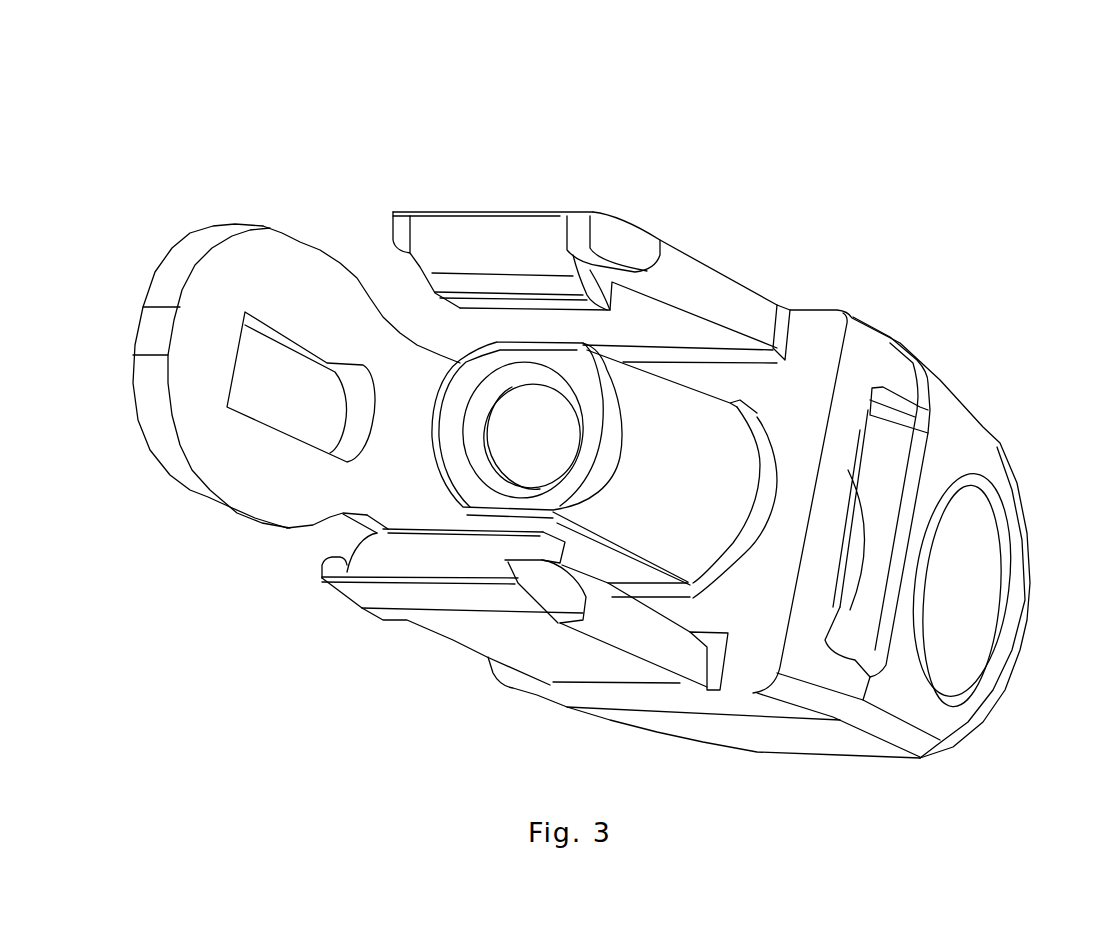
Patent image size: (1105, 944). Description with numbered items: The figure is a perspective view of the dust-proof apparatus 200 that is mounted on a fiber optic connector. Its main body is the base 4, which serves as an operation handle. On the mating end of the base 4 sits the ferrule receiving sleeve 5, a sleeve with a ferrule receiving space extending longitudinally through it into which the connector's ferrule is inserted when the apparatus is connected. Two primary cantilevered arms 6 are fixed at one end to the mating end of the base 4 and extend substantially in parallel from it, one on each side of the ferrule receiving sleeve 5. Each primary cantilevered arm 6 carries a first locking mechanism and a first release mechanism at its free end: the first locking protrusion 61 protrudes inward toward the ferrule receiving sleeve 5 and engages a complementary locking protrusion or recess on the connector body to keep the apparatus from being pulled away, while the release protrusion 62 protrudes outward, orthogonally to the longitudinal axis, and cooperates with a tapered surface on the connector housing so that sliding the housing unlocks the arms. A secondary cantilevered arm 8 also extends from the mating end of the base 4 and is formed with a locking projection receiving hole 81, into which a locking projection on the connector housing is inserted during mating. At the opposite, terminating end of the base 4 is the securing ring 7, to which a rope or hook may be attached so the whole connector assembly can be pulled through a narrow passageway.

The dust-proof apparatus 200 is at (749, 233).
The base 4 is at (857, 378).
The ferrule receiving sleeve 5 is at (693, 518).
The primary cantilevered arm 6 is at (538, 643).
The first locking protrusion 61 is at (583, 270).
The release protrusion 62 is at (618, 240).
The securing ring 7 is at (970, 595).
The secondary cantilevered arm 8 is at (273, 472).
The locking projection receiving hole 81 is at (280, 383).